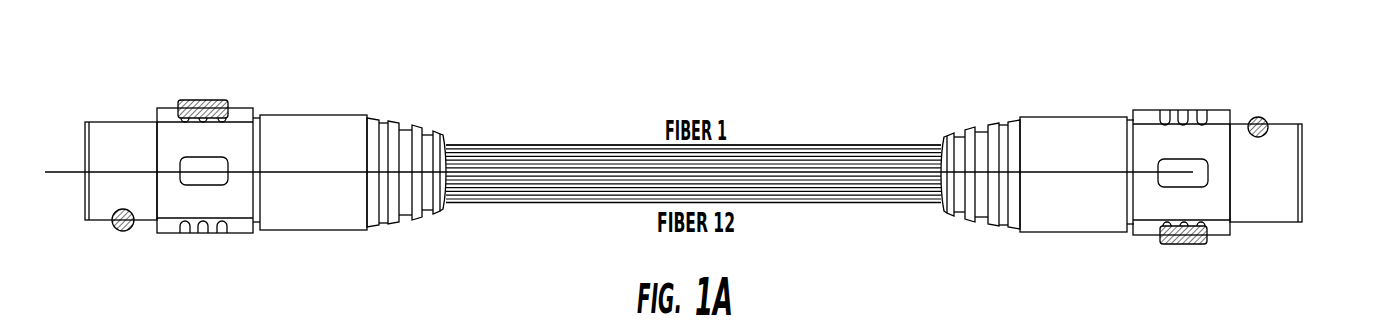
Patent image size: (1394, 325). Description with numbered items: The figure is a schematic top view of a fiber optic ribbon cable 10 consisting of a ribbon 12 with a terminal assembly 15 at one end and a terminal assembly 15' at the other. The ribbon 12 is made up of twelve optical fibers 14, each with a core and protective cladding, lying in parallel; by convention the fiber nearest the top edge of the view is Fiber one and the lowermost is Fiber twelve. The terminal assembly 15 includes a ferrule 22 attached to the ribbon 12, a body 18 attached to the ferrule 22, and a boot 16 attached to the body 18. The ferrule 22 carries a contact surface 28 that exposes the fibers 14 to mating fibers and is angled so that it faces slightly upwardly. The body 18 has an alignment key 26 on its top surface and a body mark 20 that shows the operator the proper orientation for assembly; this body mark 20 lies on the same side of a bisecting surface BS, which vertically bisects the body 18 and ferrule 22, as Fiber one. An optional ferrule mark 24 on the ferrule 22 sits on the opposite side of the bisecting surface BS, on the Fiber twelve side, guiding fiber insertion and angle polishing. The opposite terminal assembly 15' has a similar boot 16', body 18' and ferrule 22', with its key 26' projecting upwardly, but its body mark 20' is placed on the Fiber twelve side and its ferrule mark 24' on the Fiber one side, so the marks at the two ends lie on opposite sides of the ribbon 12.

The fiber optic ribbon cable 10 is at (860, 112).
The ribbon 12 is at (596, 133).
The optical fibers 14 is at (766, 148).
The terminal assembly 15 is at (263, 152).
The boot 16 is at (349, 143).
The body 18 is at (229, 124).
The body mark 20 is at (211, 80).
The ferrule 22 is at (122, 128).
The ferrule mark 24 is at (146, 246).
The alignment key 26 is at (154, 223).
The contact surface 28 is at (87, 124).
The bisecting surface BS is at (63, 170).
The terminal assembly 15' is at (1157, 154).
The boot 16' is at (1037, 130).
The body 18' is at (1181, 124).
The body mark 20' is at (1201, 258).
The ferrule 22' is at (1285, 153).
The ferrule mark 24' is at (1272, 88).
The key 26' is at (1265, 174).